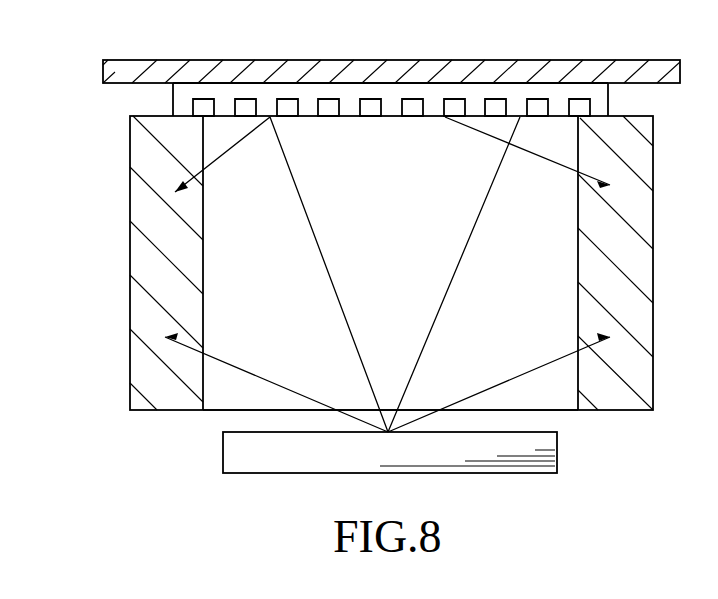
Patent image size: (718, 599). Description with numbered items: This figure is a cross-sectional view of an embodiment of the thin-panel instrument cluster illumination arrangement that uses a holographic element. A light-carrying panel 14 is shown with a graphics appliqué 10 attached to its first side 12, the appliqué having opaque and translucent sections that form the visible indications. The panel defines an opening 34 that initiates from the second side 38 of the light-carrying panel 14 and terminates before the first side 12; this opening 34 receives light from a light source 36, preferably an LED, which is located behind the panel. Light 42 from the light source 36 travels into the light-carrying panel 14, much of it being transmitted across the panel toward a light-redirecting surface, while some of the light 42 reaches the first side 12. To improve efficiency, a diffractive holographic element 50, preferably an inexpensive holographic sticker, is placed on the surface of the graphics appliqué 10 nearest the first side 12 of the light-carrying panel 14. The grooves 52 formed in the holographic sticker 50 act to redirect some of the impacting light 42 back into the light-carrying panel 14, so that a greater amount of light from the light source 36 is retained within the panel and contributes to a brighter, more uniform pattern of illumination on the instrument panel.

The graphics appliqué 10 is at (547, 70).
The first side 12 is at (628, 108).
The light-carrying panel 14 is at (613, 243).
The opening 34 is at (280, 305).
The light source 36 is at (520, 475).
The second side 38 is at (213, 411).
The light 42 is at (313, 217).
The diffractive holographic element 50 is at (185, 100).
The grooves 52 is at (333, 99).